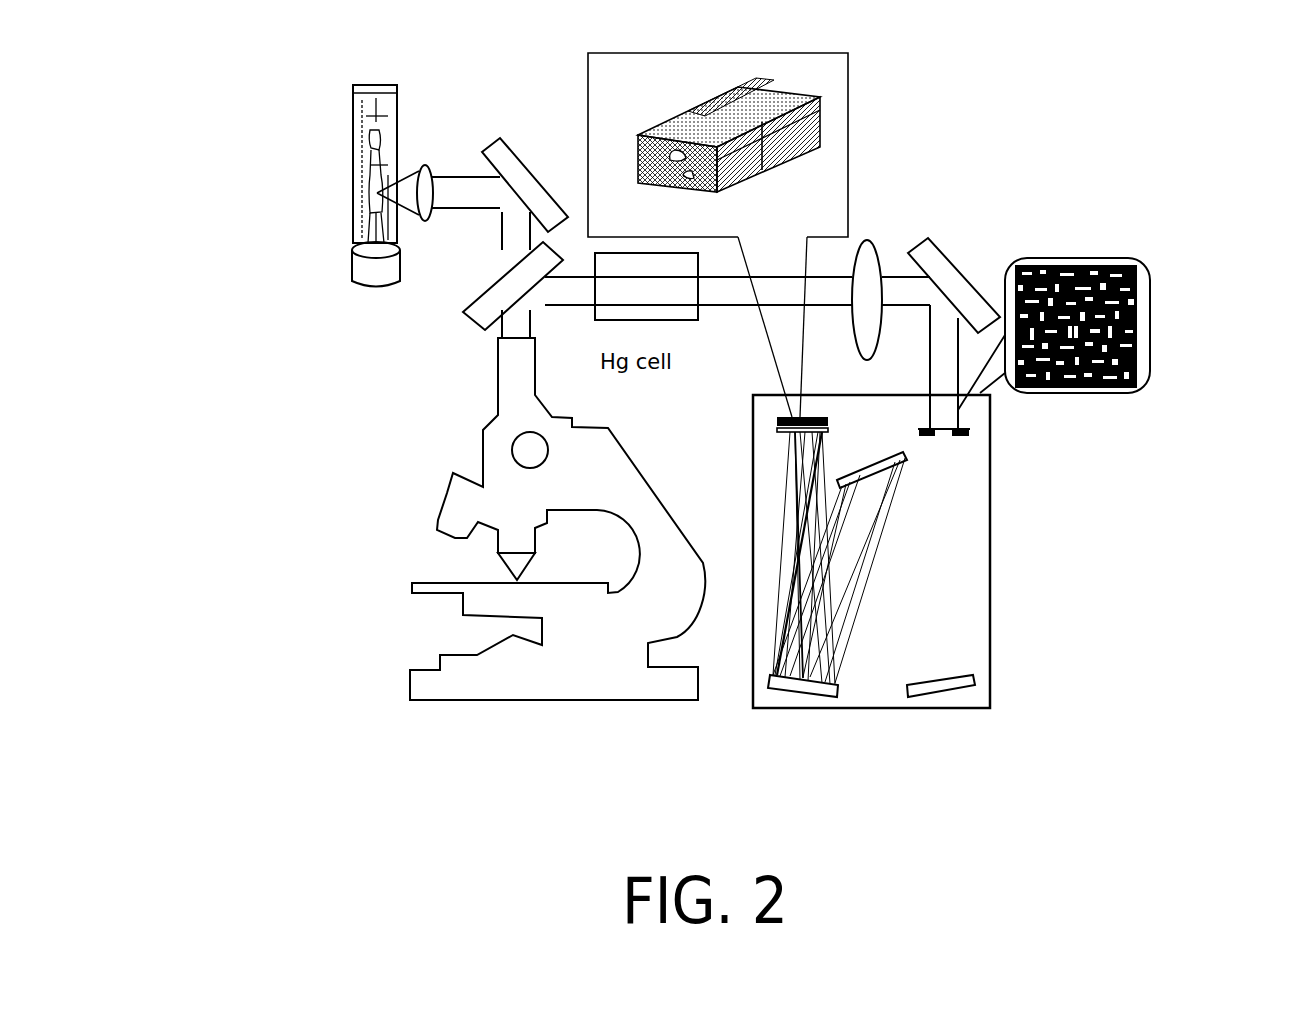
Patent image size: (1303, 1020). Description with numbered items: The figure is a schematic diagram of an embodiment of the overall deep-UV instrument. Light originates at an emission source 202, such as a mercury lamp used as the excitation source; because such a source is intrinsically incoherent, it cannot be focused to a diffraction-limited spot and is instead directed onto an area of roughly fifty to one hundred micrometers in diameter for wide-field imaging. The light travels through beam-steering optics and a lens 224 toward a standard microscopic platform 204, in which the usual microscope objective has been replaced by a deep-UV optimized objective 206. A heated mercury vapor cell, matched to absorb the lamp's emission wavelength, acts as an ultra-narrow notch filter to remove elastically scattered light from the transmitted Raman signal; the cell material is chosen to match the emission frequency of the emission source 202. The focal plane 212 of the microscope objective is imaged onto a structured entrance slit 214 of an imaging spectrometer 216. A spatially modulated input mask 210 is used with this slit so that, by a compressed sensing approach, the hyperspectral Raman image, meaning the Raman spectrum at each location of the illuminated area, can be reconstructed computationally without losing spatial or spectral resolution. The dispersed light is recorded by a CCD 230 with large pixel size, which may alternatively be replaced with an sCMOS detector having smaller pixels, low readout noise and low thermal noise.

The emission source 202 is at (206, 45).
The standard microscopic platform 204 is at (410, 733).
The deep-UV optimized objective 206 is at (458, 560).
The focal plane 212 is at (500, 579).
The CCD 230 is at (835, 121).
The lens 224 is at (887, 230).
The spatially modulated input mask 210 is at (1155, 325).
The structured entrance slit 214 is at (967, 446).
The imaging spectrometer 216 is at (1009, 590).